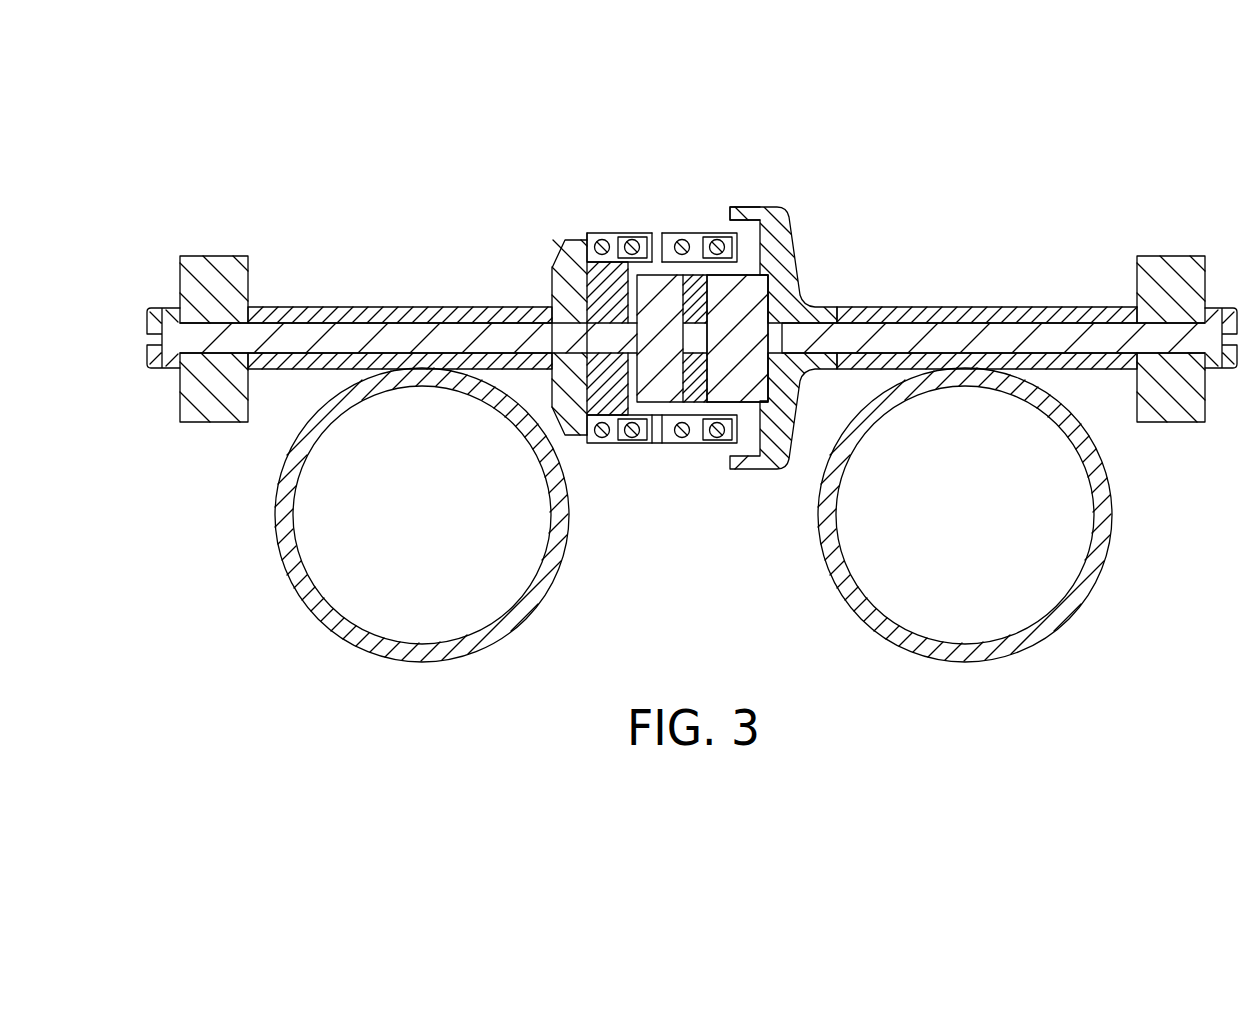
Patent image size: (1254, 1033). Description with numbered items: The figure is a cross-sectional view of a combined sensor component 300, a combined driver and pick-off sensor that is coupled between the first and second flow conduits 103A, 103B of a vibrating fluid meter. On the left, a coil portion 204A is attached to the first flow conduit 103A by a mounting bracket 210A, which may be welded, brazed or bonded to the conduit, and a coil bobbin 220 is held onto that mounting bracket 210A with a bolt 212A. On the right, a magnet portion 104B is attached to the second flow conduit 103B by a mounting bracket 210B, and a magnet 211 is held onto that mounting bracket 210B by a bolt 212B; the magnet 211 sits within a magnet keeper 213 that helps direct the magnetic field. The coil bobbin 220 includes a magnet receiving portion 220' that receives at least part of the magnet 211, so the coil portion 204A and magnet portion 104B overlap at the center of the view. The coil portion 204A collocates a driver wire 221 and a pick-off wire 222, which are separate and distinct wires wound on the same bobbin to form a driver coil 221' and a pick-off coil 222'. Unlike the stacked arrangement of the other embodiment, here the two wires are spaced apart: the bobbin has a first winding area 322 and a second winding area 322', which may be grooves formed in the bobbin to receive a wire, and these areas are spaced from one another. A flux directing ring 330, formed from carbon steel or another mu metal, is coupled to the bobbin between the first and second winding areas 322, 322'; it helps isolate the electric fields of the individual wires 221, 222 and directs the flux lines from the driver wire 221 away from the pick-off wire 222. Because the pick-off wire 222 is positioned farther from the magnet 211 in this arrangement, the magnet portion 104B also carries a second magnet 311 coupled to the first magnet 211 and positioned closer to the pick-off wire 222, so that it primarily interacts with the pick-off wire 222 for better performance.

The combined sensor component 300 is at (697, 130).
The coil portion 204A is at (543, 230).
The coil bobbin 220 is at (609, 215).
The magnet receiving portion 220' is at (752, 255).
The pick-off wire 222 is at (635, 218).
The driver wire 221 is at (714, 202).
The second magnet 311 is at (662, 288).
The magnet keeper 213 is at (746, 206).
The magnet portion 104B is at (800, 227).
The mounting bracket 210A is at (320, 307).
The bolt 212A is at (398, 330).
The mounting bracket 210B is at (1072, 308).
The bolt 212B is at (962, 340).
The first flow conduit 103A is at (372, 648).
The second flow conduit 103B is at (1057, 620).
The second winding area 322' is at (602, 477).
The pick-off coil 222' is at (639, 491).
The driver coil 221' is at (677, 471).
The first winding area 322 is at (708, 486).
The magnet 211 is at (740, 392).
The flux directing ring 330 is at (660, 443).